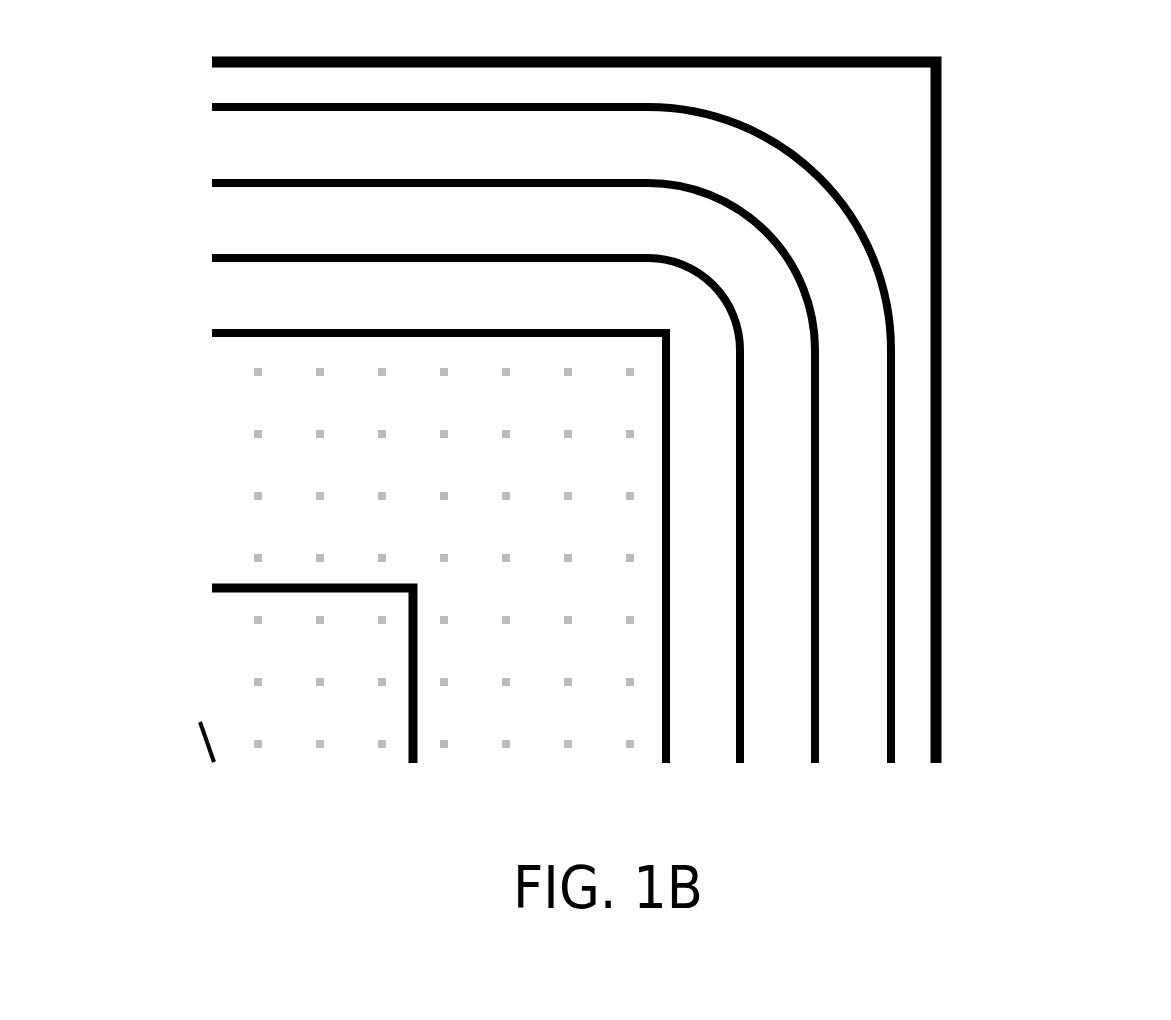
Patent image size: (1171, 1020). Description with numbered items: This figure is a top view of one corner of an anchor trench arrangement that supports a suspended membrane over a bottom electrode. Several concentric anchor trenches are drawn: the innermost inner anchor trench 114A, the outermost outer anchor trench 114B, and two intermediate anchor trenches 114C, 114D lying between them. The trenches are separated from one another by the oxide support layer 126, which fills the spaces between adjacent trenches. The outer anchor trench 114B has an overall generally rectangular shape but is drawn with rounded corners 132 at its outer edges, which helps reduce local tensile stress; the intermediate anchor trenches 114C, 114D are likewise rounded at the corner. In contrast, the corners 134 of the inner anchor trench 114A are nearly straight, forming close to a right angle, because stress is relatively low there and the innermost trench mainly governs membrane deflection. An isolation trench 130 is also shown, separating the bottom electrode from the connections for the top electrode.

The inner anchor trench 114A is at (662, 527).
The outer anchor trench 114B is at (883, 378).
The intermediate anchor trench 114C is at (820, 610).
The intermediate anchor trench 114D is at (745, 685).
The oxide support layer 126 is at (722, 510).
The isolation trench 130 is at (418, 660).
The rounded corners 132 is at (828, 186).
The corners of the inner anchor trench 134 is at (645, 347).